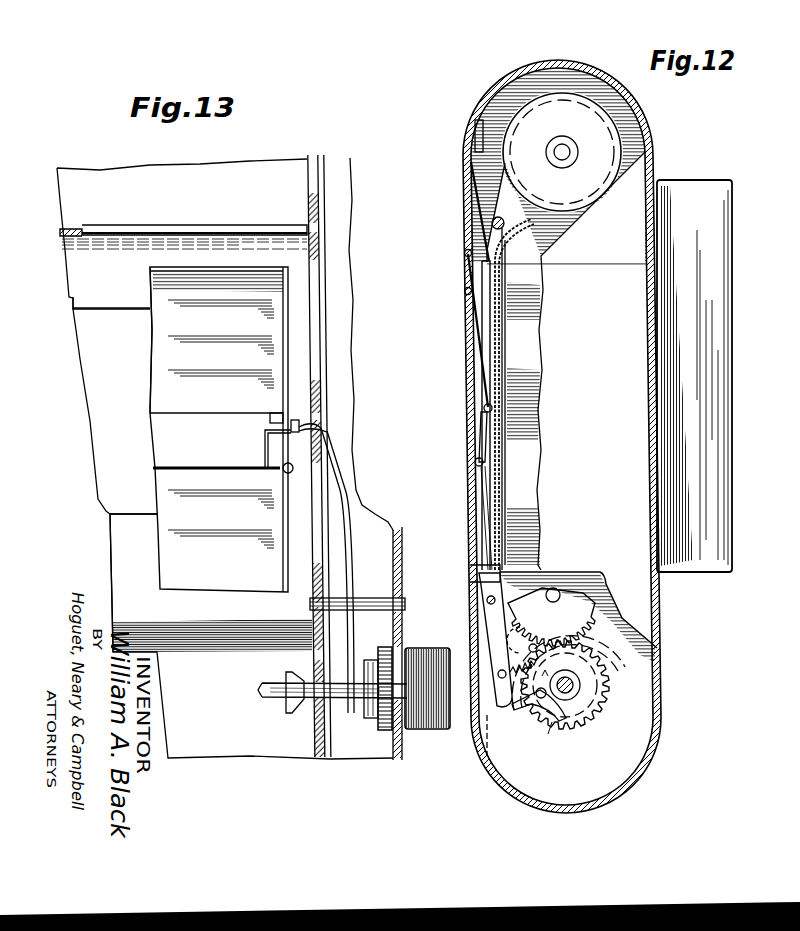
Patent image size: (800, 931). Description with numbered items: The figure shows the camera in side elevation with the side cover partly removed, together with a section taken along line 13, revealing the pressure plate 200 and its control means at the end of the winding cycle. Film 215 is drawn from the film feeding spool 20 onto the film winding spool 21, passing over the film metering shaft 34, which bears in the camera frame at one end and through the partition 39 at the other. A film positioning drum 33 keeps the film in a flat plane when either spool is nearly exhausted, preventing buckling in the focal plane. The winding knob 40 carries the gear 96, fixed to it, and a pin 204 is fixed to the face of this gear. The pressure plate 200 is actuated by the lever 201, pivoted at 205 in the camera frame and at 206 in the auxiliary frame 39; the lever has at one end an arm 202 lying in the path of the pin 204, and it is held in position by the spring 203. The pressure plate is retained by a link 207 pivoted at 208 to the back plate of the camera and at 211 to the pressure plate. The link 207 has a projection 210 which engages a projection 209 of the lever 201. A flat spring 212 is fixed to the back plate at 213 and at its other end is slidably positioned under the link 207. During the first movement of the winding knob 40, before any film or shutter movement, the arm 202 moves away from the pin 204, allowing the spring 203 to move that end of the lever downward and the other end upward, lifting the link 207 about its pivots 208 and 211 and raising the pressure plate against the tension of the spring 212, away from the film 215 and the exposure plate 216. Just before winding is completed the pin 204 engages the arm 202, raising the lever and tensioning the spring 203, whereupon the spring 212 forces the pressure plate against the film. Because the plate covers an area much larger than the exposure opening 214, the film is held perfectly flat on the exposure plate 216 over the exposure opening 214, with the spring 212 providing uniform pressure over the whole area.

In FIG. 12, the section line 13 is at (482, 125).
In FIG. 12, the film feeding spool 20 is at (562, 152).
In FIG. 12, the film winding spool 21 is at (622, 705).
In FIG. 12, the film positioning drum 33 is at (493, 222).
In FIG. 13, the film positioning drum 33 is at (159, 227).
In FIG. 12, the film metering shaft 34 is at (512, 641).
In FIG. 13, the partition 39 is at (318, 732).
In FIG. 13, the winding knob 40 is at (432, 730).
In FIG. 12, the gear 96 is at (593, 672).
In FIG. 13, the gear 96 is at (389, 645).
In FIG. 12, the pressure plate 200 is at (487, 301).
In FIG. 13, the pressure plate 200 is at (160, 285).
In FIG. 12, the lever 201 is at (497, 658).
In FIG. 13, the lever 201 is at (343, 568).
In FIG. 12, the arm 202 is at (514, 710).
In FIG. 12, the spring 203 is at (535, 648).
In FIG. 12, the pin 204 is at (569, 737).
In FIG. 13, the pin 204 is at (365, 707).
In FIG. 12, the pivot 205 is at (487, 600).
In FIG. 13, the pivot 206 is at (310, 603).
In FIG. 12, the link 207 is at (478, 438).
In FIG. 13, the link 207 is at (256, 448).
In FIG. 12, the pivot 208 is at (475, 462).
In FIG. 13, the pivot 208 is at (285, 472).
In FIG. 13, the projection 209 is at (312, 422).
In FIG. 13, the projection 210 is at (295, 419).
In FIG. 12, the pivot 211 is at (483, 407).
In FIG. 13, the pivot 211 is at (272, 414).
In FIG. 12, the flat spring 212 is at (479, 340).
In FIG. 12, the fixing point 213 is at (464, 291).
In FIG. 12, the exposure opening 214 is at (505, 450).
In FIG. 13, the exposure opening 214 is at (137, 313).
In FIG. 12, the film 215 is at (485, 192).
In FIG. 12, the exposure plate 216 is at (505, 274).
In FIG. 13, the exposure plate 216 is at (92, 308).